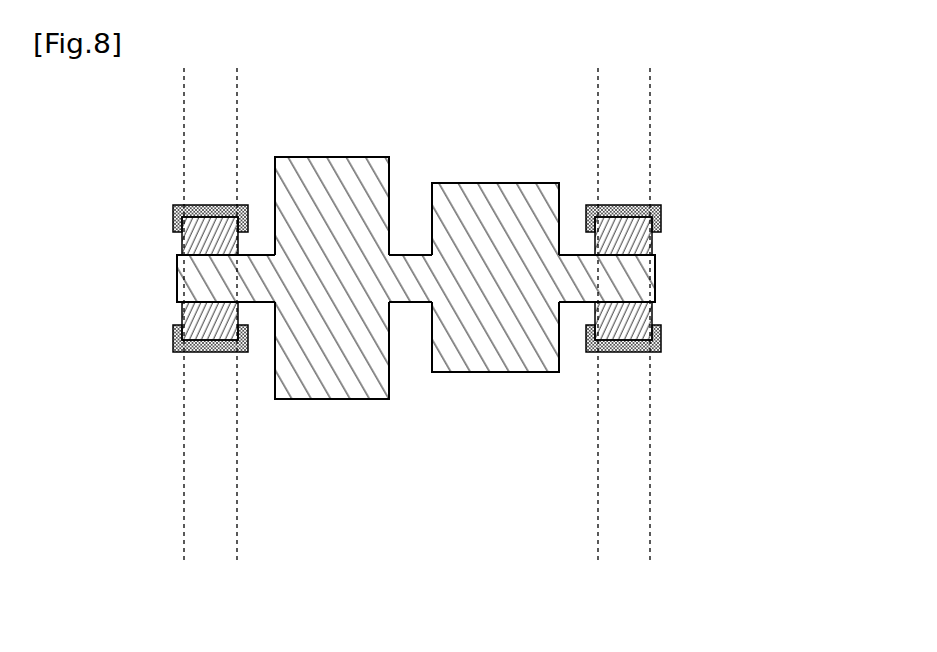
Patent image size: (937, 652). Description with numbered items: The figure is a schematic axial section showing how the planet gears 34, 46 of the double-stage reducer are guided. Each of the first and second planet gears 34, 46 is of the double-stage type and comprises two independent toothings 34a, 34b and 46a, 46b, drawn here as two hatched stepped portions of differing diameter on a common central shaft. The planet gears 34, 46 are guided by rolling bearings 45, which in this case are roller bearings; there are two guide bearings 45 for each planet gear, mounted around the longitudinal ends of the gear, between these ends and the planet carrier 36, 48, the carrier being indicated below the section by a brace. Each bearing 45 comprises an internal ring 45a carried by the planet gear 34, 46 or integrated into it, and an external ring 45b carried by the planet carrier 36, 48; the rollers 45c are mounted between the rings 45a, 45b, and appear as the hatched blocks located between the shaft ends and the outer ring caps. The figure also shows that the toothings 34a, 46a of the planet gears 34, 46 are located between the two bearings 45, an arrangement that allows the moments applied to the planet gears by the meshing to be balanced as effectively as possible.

The first planet gear 34 is at (416, 307).
The second planet gear 46 is at (416, 307).
The toothing 34a is at (360, 247).
The toothing 46a is at (388, 125).
The toothing 34b is at (505, 219).
The toothing 46b is at (487, 183).
The planet carrier 36 is at (416, 342).
The planet carrier 48 is at (416, 342).
The rolling bearing 45 is at (420, 271).
The internal ring 45a is at (199, 300).
The external ring 45b is at (203, 353).
The rollers 45c is at (218, 235).